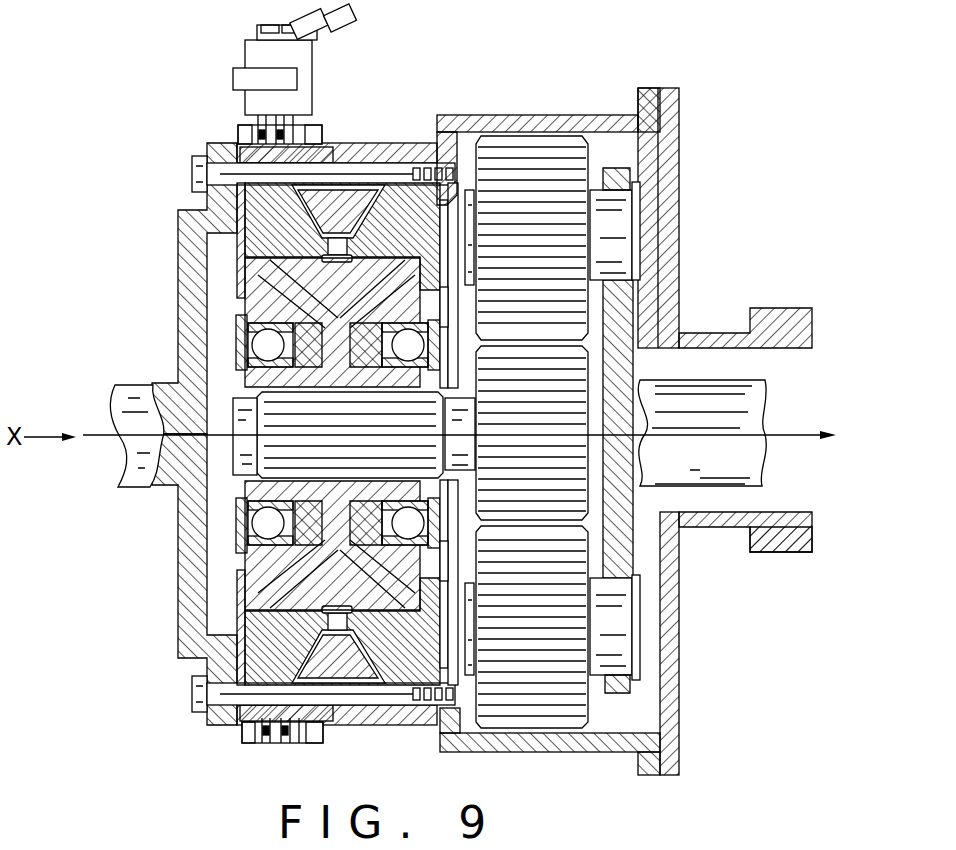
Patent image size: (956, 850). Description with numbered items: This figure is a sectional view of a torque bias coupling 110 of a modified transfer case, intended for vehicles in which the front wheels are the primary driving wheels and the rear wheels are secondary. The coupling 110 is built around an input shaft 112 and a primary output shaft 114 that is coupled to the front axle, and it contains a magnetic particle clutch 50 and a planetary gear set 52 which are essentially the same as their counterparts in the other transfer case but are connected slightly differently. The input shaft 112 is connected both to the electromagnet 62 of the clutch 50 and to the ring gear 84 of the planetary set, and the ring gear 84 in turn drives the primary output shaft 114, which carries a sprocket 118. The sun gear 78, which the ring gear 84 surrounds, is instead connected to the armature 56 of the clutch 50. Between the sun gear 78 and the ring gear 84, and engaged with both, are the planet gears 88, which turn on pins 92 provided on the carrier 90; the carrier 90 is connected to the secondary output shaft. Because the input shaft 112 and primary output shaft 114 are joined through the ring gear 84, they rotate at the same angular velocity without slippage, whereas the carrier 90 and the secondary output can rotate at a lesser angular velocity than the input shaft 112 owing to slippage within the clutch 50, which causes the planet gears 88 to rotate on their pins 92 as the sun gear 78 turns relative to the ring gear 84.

The magnetic particle clutch 50 is at (392, 107).
The planetary gear set 52 is at (722, 144).
The armature 56 is at (230, 291).
The electromagnet 62 is at (217, 188).
The sun gear 78 is at (550, 487).
The ring gear 84 is at (527, 115).
The planet gears 88 is at (547, 162).
The carrier 90 is at (617, 313).
The pins 92 is at (617, 227).
The torque bias coupling 110 is at (192, 107).
The input shaft 112 is at (135, 478).
The primary output shaft 114 is at (717, 527).
The sprocket 118 is at (787, 537).